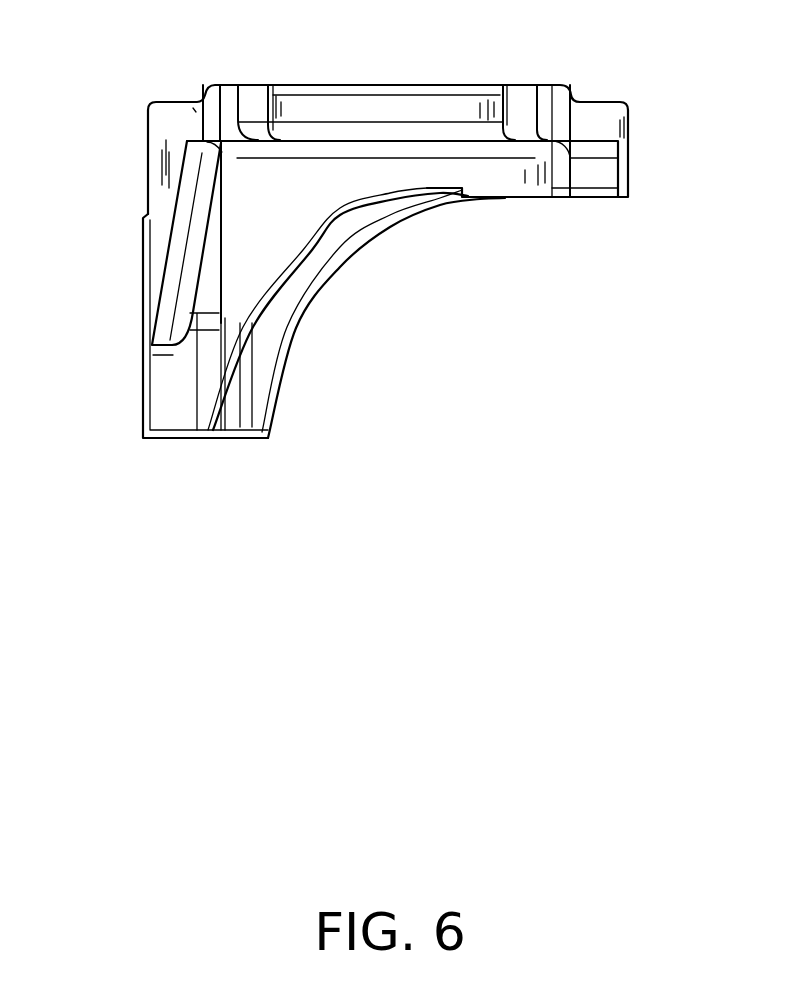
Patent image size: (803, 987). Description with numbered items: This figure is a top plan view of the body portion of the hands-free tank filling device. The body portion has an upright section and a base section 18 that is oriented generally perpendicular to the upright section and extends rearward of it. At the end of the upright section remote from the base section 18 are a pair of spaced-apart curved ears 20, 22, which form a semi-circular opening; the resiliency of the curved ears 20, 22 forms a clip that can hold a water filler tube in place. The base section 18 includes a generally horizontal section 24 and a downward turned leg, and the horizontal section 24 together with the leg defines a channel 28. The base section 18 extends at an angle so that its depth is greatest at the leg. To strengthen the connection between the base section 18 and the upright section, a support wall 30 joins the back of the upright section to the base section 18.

The base section 18 is at (630, 168).
The curved ear 20 is at (252, 100).
The curved ear 22 is at (519, 99).
The horizontal section 24 is at (388, 227).
The channel 28 is at (282, 298).
The support wall 30 is at (163, 203).